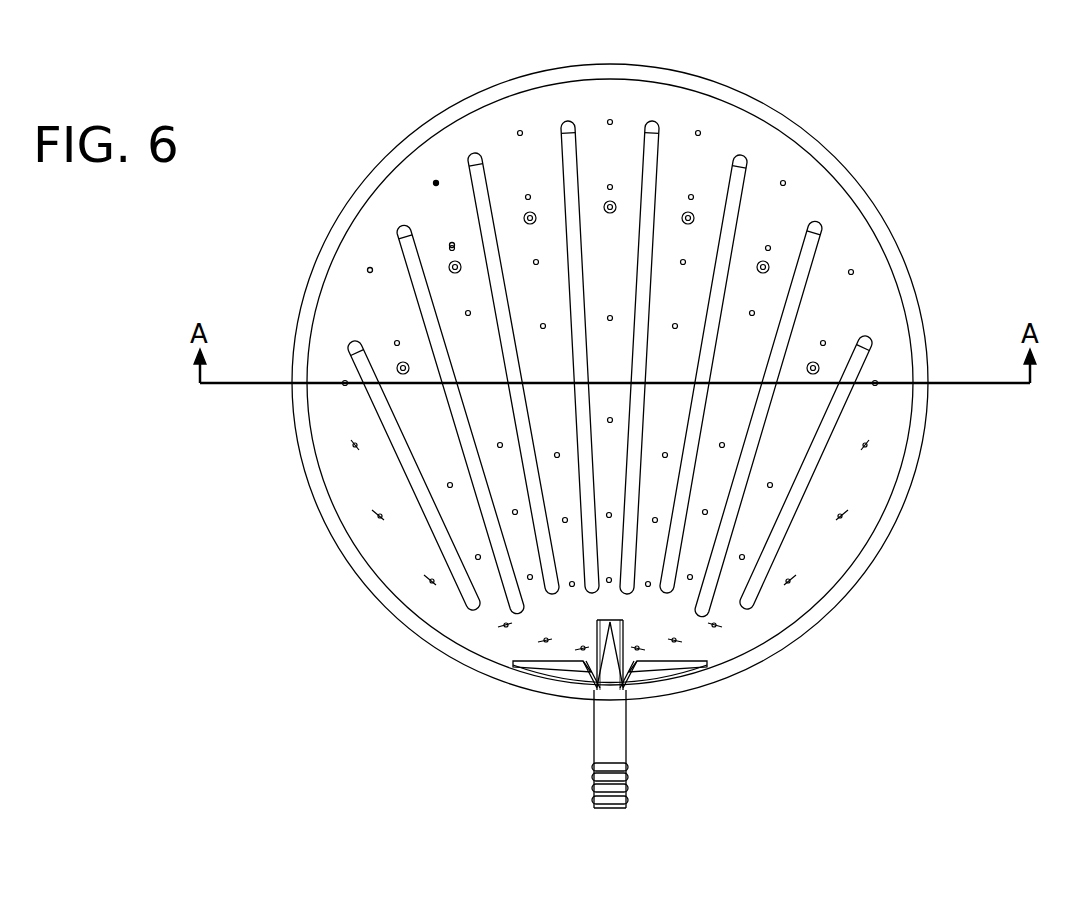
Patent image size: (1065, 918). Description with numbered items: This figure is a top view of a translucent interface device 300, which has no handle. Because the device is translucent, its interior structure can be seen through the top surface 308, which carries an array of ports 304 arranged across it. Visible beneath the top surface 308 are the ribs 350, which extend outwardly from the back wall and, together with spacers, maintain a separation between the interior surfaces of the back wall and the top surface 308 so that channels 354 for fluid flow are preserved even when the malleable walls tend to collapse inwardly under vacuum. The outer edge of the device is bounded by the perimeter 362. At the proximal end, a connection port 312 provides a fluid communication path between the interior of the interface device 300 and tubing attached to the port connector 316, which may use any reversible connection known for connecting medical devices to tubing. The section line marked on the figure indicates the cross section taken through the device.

The translucent interface device 300 is at (803, 194).
The array of ports 304 is at (370, 270).
The top surface 308 is at (768, 617).
The connection port 312 is at (624, 722).
The port connector 316 is at (630, 788).
The ribs 350 is at (655, 137).
The channels 354 is at (697, 172).
The perimeter 362 is at (850, 583).